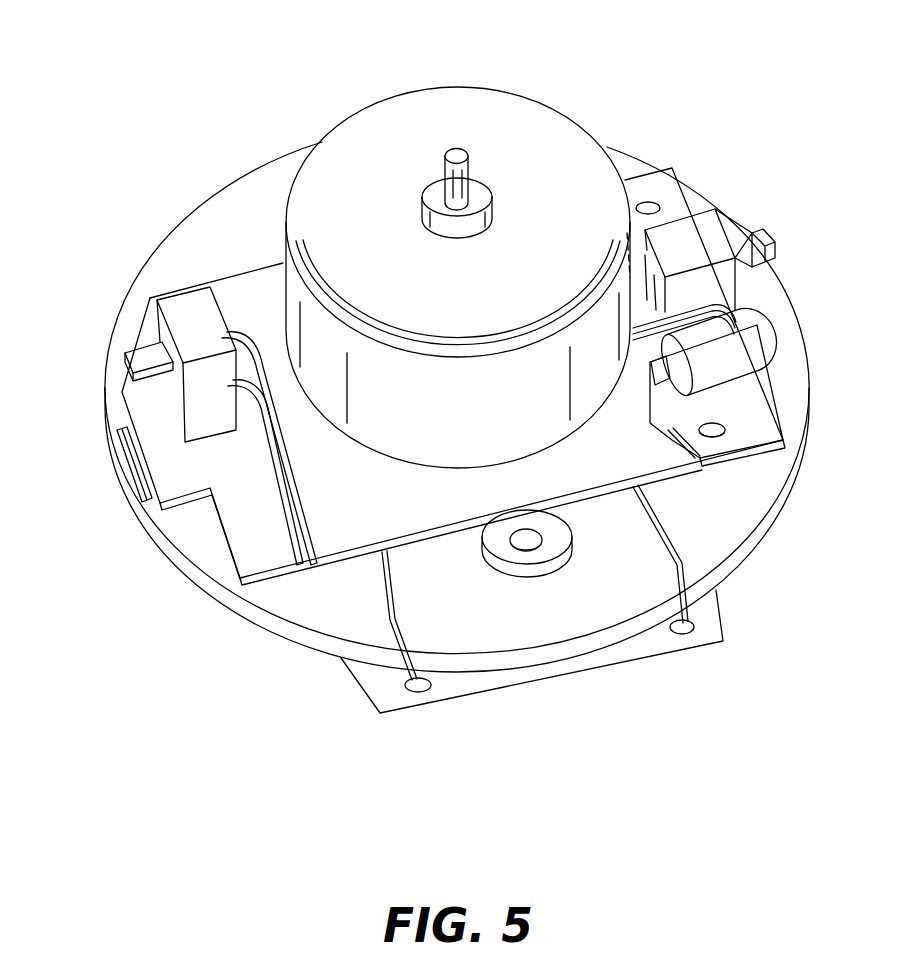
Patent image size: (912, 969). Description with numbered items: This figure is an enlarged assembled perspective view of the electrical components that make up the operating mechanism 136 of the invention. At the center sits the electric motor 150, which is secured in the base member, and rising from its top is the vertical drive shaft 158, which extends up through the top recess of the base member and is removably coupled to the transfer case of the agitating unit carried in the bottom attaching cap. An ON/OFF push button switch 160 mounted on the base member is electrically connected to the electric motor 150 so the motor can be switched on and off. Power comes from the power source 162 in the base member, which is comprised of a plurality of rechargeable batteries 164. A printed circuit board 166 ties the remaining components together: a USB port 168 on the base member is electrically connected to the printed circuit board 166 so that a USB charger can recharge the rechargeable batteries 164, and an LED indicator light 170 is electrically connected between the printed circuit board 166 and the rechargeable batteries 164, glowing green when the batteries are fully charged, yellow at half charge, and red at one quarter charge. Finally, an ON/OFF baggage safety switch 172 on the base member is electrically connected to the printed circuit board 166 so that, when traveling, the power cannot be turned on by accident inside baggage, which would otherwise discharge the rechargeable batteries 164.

The operating mechanism 136 is at (322, 125).
The electric motor 150 is at (517, 113).
The vertical drive shaft 158 is at (453, 178).
The ON/OFF push button switch 160 is at (733, 237).
The power source 162 is at (665, 652).
The rechargeable batteries 164 is at (557, 668).
The printed circuit board 166 is at (755, 427).
The USB port 168 is at (133, 452).
The LED indicator light 170 is at (750, 354).
The ON/OFF baggage safety switch 172 is at (153, 355).